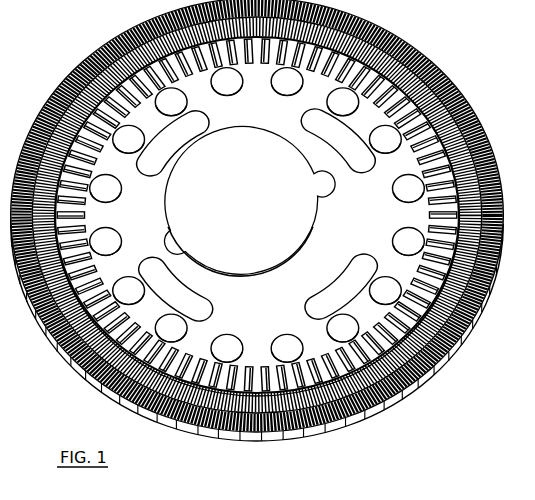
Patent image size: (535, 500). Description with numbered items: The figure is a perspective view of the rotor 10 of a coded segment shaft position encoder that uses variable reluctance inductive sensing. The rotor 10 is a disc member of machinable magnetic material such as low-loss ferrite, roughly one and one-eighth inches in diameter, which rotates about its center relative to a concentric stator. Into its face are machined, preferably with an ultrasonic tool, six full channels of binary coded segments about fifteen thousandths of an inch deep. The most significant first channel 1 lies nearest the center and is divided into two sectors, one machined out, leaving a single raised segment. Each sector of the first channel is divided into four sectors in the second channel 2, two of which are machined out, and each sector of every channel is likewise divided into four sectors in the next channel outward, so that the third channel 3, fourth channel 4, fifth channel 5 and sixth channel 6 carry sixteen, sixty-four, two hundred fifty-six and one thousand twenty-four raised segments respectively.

The rotor 10 is at (394, 32).
The sixth channel 6 is at (440, 82).
The fifth channel 5 is at (445, 145).
The fourth channel 4 is at (438, 207).
The third channel 3 is at (280, 350).
The second channel 2 is at (177, 146).
The first channel 1 is at (187, 213).